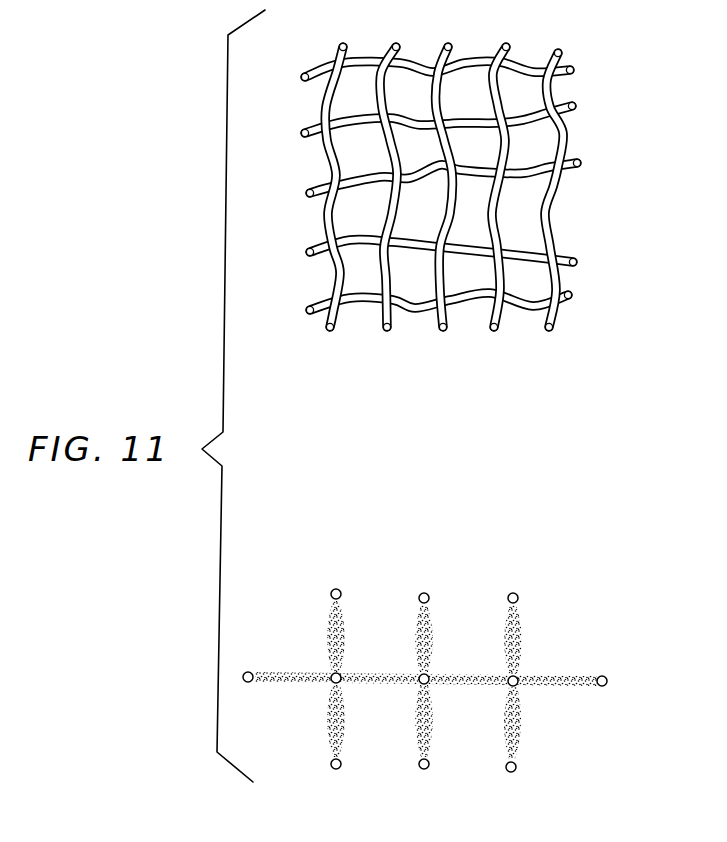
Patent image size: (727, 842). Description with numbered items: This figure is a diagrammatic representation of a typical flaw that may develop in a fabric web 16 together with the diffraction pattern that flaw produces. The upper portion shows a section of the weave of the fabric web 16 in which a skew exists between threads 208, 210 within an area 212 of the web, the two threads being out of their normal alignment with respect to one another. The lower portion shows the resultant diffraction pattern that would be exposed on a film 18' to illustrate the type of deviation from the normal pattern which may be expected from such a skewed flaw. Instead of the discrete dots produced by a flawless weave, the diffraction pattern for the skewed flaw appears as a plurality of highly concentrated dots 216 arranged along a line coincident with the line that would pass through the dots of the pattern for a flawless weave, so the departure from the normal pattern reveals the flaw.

The fabric web 16 is at (622, 154).
The thread 208 is at (523, 179).
The thread 210 is at (530, 260).
The area 212 is at (535, 230).
The film 18' is at (454, 676).
The highly concentrated dots 216 is at (418, 618).